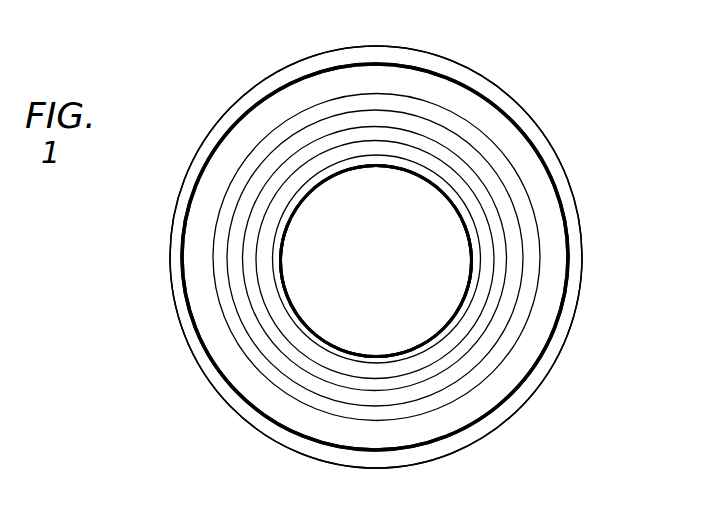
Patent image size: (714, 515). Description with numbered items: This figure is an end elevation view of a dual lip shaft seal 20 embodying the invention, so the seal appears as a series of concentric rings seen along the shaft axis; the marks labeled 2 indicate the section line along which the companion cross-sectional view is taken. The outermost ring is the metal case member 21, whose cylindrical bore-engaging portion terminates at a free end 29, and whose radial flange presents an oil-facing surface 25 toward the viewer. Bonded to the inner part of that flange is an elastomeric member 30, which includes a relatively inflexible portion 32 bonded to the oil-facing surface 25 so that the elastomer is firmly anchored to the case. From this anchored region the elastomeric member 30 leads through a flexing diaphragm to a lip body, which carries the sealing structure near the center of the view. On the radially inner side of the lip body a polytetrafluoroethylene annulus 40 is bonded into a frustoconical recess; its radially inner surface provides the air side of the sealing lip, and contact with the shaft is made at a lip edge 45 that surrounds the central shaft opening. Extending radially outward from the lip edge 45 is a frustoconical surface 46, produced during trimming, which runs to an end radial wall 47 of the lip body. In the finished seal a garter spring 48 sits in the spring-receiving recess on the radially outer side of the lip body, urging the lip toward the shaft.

The section line 2- 2 is at (386, 18).
The dual lip shaft seal 20 is at (558, 99).
The metal case member 21 is at (571, 186).
The oil-facing surface 25 is at (535, 172).
The free end 29 is at (565, 218).
The elastomeric member 30 is at (446, 232).
The relatively inflexible portion 32 is at (532, 253).
The polytetrafluoroethylene annulus 40 is at (424, 352).
The lip edge 45 is at (398, 357).
The frustoconical surface 46 is at (467, 321).
The end radial wall 47 is at (494, 299).
The garter spring 48 is at (513, 282).